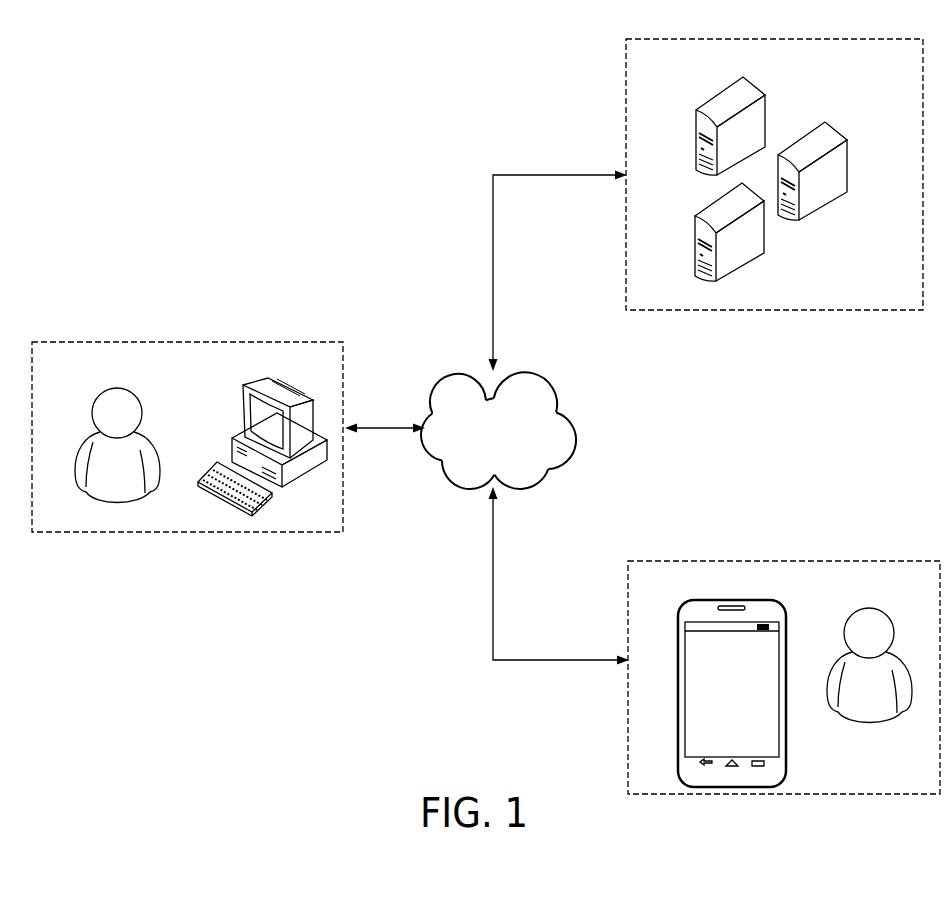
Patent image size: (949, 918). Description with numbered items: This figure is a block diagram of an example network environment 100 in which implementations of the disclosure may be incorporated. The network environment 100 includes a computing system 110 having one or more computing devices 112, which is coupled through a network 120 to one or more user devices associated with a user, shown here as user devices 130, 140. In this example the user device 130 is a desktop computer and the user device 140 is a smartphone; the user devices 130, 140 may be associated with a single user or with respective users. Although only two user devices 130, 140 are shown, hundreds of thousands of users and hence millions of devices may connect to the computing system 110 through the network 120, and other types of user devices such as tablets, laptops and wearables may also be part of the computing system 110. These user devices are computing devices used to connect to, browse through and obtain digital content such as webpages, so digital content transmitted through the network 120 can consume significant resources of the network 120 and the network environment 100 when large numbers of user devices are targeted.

The network environment 100 is at (271, 152).
The computing system 110 is at (868, 40).
The computing devices 112 is at (765, 98).
The network 120 is at (533, 374).
The user device 130 is at (270, 387).
The user device 140 is at (735, 599).